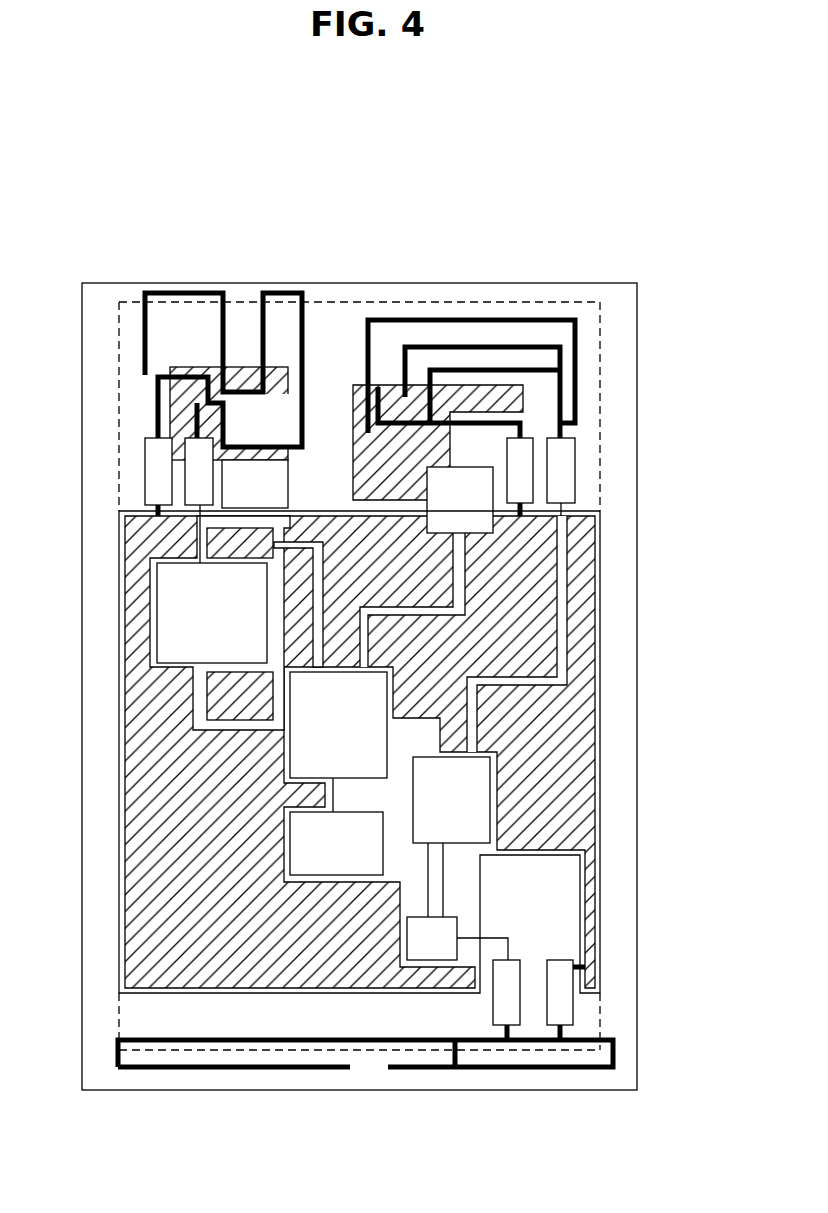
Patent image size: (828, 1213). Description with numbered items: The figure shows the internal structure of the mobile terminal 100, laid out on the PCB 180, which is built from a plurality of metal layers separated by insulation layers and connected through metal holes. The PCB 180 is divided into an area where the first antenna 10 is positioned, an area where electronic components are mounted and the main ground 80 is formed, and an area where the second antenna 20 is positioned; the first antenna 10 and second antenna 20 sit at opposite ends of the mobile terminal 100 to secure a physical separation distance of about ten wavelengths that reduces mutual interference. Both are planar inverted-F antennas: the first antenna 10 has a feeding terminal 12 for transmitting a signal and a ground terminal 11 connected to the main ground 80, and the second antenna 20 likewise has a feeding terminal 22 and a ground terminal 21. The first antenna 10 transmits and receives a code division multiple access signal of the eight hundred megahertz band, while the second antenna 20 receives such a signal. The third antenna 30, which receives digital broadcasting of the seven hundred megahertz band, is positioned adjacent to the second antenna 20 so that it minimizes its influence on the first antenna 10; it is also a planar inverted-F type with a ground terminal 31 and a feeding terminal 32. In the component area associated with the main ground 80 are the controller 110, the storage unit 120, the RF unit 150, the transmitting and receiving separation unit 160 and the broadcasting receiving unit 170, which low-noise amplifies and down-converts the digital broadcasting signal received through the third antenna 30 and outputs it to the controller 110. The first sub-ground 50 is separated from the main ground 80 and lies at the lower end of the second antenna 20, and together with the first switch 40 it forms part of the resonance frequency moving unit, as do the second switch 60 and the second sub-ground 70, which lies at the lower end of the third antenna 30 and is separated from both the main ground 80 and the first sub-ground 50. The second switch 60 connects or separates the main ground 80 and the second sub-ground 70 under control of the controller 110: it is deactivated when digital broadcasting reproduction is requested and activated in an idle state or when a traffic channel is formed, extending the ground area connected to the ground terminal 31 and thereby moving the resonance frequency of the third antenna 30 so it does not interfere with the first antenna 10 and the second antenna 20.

The mobile terminal 100 is at (418, 276).
The first antenna 10 is at (613, 1050).
The ground terminal 11 is at (570, 1010).
The feeding terminal 12 is at (522, 1015).
The second antenna 20 is at (455, 320).
The ground terminal 21 is at (527, 485).
The feeding terminal 22 is at (565, 453).
The third antenna 30 is at (183, 293).
The ground terminal 31 is at (152, 484).
The feeding terminal 32 is at (193, 452).
The first switch 40 is at (460, 500).
The first sub-ground 50 is at (438, 442).
The second switch 60 is at (255, 484).
The second sub-ground 70 is at (235, 413).
The main ground 80 is at (327, 528).
The controller 110 is at (338, 742).
The storage unit 120 is at (336, 843).
The RF unit 150 is at (451, 837).
The transmitting and receiving separation unit 160 is at (457, 938).
The broadcasting receiving unit 170 is at (212, 613).
The PCB 180 is at (600, 682).